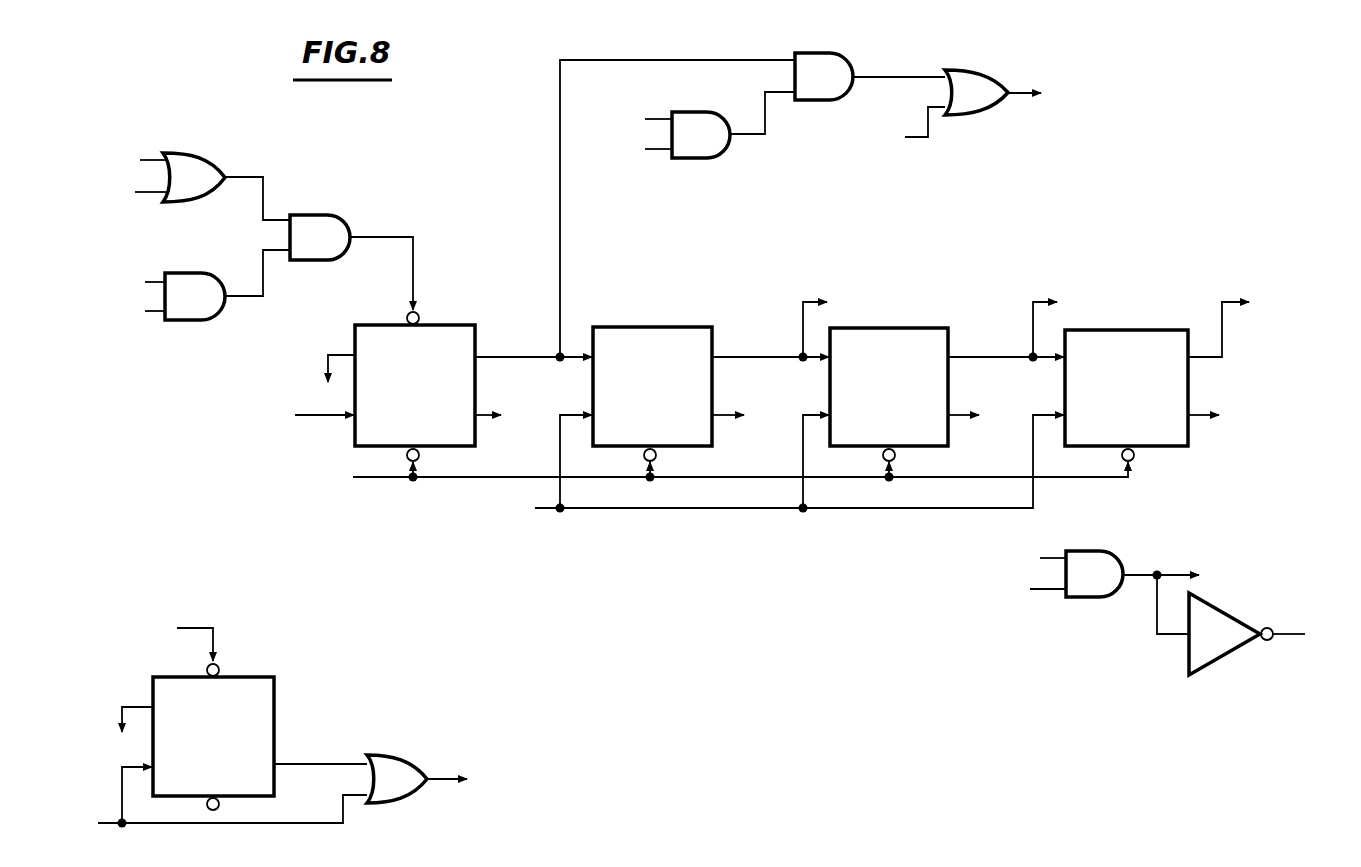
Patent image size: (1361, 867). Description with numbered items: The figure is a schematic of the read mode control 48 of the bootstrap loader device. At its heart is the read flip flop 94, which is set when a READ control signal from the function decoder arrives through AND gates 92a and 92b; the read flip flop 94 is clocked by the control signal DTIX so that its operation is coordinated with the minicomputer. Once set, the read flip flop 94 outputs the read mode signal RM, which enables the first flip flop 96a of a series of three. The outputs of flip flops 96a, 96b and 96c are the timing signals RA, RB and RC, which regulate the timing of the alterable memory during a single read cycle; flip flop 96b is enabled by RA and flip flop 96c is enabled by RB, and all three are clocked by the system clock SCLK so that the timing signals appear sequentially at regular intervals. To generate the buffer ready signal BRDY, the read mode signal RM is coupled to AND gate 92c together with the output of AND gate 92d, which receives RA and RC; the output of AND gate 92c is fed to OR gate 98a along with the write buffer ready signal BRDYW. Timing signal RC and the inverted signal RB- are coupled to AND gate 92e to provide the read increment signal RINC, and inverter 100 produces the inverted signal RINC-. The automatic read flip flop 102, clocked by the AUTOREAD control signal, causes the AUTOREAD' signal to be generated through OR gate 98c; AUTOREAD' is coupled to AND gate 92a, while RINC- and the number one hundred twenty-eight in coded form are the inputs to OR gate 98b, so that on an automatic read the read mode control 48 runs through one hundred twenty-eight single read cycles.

The read mode control 48 is at (1190, 142).
The AND gate 92a is at (208, 308).
The AND gate 92b is at (334, 249).
The AND gate 92c is at (838, 89).
The AND gate 92d is at (715, 147).
The AND gate 92e is at (1109, 586).
The read flip flop 94 is at (471, 352).
The flip flop 96a is at (704, 354).
The flip flop 96b is at (942, 354).
The flip flop 96c is at (1179, 356).
The OR gate 98a is at (989, 105).
The OR gate 98b is at (208, 190).
The OR gate 98c is at (411, 791).
The inverter 100 is at (1234, 645).
The automatic read flip flop 102 is at (268, 702).